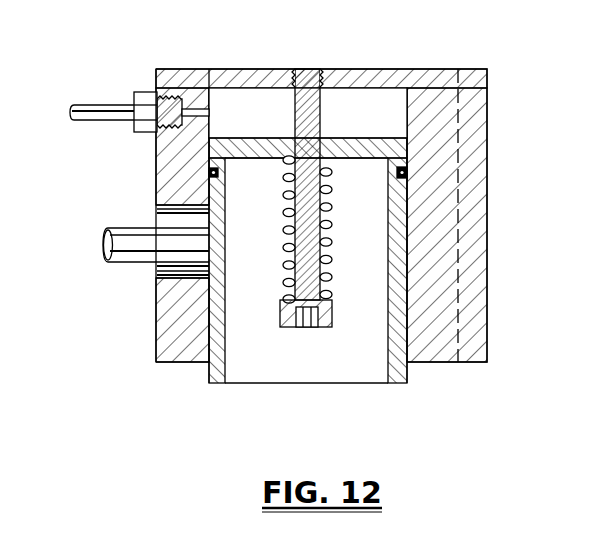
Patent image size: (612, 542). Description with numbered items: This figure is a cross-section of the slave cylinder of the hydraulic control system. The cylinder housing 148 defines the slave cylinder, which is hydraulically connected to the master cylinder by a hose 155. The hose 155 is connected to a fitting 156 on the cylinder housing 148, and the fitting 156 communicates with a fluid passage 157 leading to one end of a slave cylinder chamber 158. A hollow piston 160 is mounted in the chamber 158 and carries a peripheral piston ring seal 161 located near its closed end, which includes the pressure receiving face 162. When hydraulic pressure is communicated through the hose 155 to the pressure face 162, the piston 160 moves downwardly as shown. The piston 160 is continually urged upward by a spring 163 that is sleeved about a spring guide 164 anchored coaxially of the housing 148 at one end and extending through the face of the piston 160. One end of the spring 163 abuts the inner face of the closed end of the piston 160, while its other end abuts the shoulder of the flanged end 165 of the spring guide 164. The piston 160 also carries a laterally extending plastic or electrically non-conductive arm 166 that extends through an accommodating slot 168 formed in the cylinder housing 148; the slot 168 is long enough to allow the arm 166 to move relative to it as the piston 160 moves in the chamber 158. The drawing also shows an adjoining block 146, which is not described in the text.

The housing block 146 is at (475, 92).
The cylinder housing 148 is at (240, 62).
The hose 155 is at (92, 110).
The fitting 156 is at (146, 97).
The fluid passage 157 is at (196, 112).
The slave cylinder chamber 158 is at (382, 115).
The hollow piston 160 is at (405, 372).
The peripheral piston ring seal 161 is at (208, 172).
The pressure receiving face 162 is at (342, 136).
The spring 163 is at (334, 263).
The spring guide 164 is at (290, 262).
The flanged end 165 is at (303, 330).
The arm 166 is at (135, 262).
The slot 168 is at (156, 218).